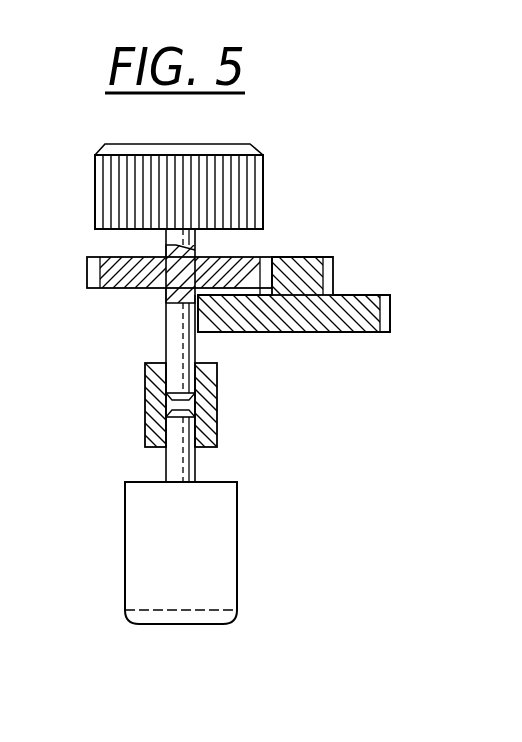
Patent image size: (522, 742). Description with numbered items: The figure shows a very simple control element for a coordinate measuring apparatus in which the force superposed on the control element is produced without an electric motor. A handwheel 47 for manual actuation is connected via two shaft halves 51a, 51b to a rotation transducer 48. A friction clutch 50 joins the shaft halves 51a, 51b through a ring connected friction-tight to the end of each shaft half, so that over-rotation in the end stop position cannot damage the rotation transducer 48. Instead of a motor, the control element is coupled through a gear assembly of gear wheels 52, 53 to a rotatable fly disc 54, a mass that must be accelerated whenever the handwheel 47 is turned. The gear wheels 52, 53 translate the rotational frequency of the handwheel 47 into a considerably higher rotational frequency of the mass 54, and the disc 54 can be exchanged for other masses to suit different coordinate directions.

The handwheel 47 is at (108, 178).
The rotation transducer 48 is at (138, 525).
The friction clutch 50 is at (158, 403).
The shaft half 51a is at (173, 346).
The shaft half 51b is at (178, 469).
The gear wheel 52 is at (108, 275).
The gear wheel 53 is at (312, 262).
The rotatable fly disc 54 is at (352, 326).